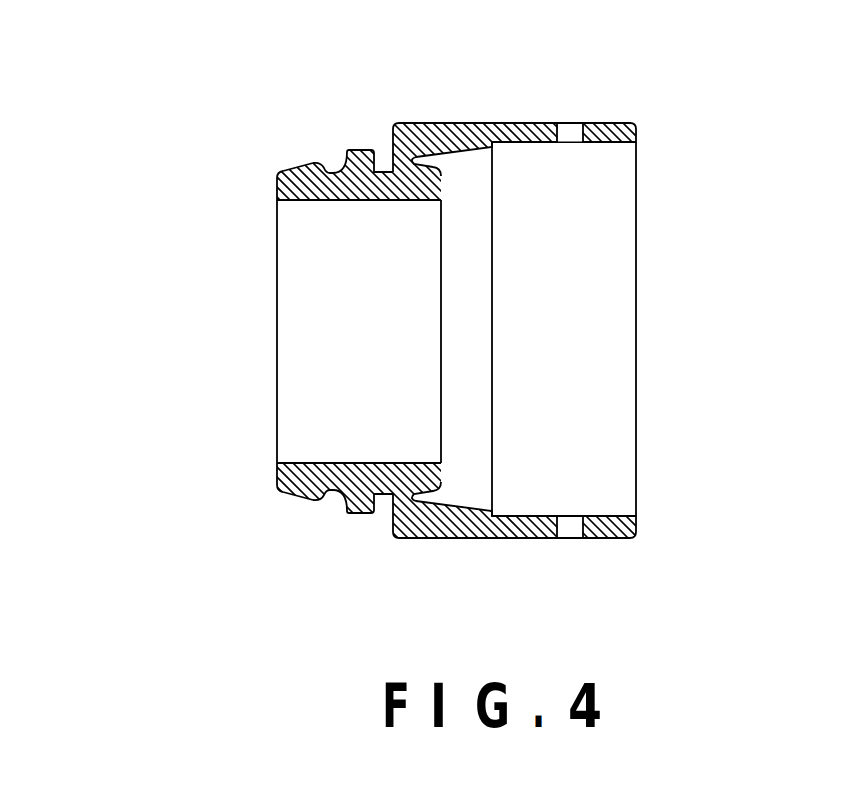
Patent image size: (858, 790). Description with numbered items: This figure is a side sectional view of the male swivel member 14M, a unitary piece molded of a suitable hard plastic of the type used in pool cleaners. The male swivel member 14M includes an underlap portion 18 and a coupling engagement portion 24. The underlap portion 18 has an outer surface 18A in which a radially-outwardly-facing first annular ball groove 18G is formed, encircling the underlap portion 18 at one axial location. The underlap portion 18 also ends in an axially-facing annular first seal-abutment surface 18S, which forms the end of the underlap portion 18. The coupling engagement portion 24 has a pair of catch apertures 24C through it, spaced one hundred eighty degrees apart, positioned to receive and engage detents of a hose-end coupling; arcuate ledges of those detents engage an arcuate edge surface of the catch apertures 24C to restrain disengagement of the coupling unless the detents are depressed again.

The male swivel member 14M is at (722, 88).
The underlap portion 18 is at (288, 335).
The outer surface 18A is at (290, 170).
The first annular ball groove 18G is at (332, 172).
The first seal-abutment surface 18S is at (278, 472).
The coupling engagement portion 24 is at (491, 124).
The catch apertures 24C is at (573, 132).